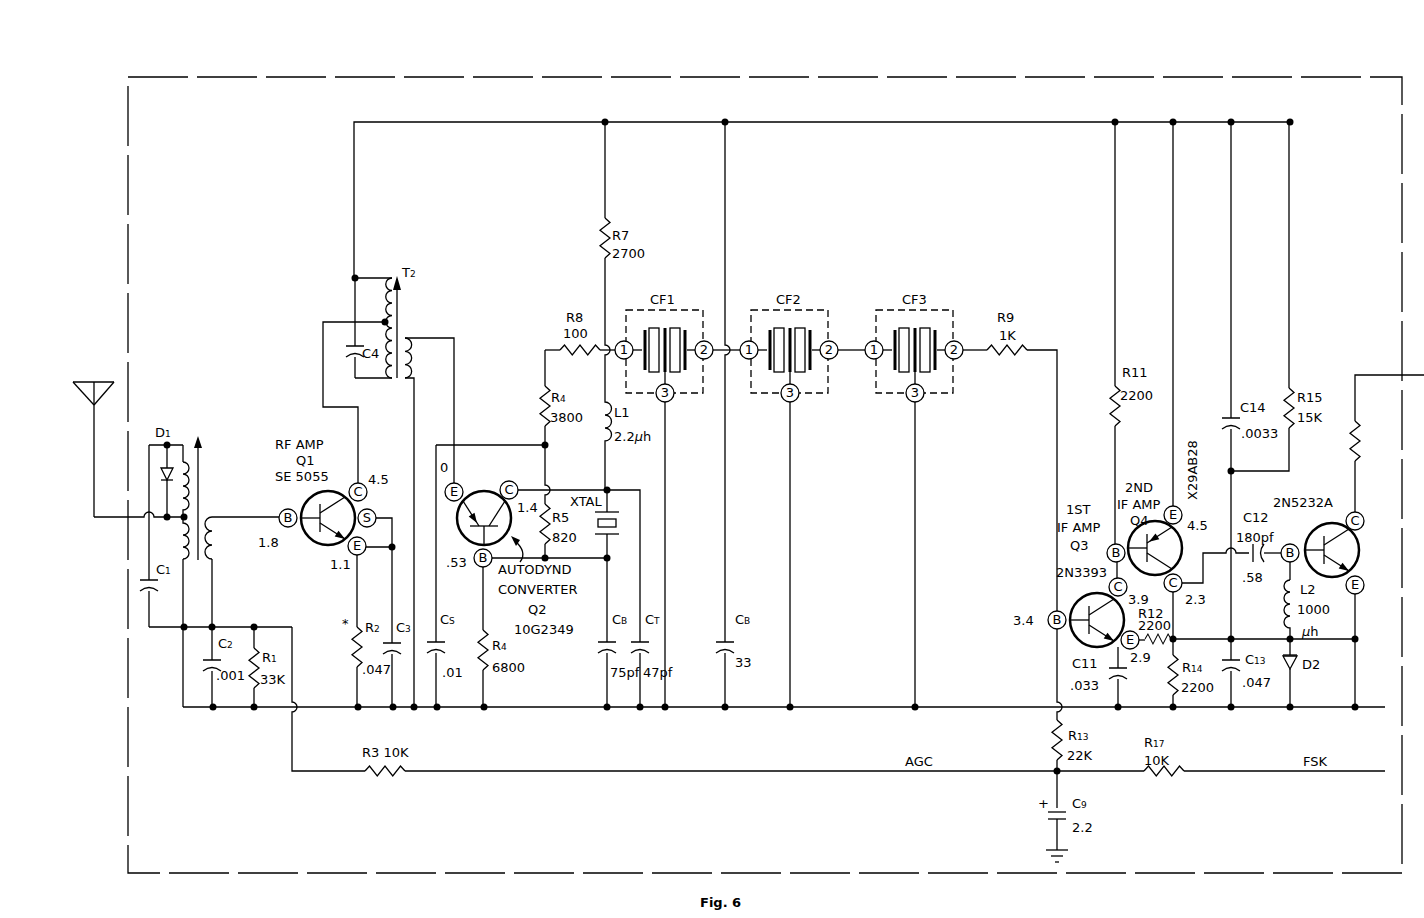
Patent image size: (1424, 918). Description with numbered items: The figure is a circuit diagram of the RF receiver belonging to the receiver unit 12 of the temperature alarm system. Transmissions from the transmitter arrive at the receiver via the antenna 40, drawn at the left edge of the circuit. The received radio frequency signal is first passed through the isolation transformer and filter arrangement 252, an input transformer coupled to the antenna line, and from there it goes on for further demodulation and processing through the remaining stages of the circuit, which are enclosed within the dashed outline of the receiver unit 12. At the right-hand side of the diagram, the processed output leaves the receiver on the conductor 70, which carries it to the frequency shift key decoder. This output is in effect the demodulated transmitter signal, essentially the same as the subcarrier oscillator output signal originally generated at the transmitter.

The receiver unit 12 is at (1188, 873).
The antenna 40 is at (86, 462).
The conductor 70 is at (1400, 382).
The isolation transformer and filter arrangement 252 is at (221, 444).